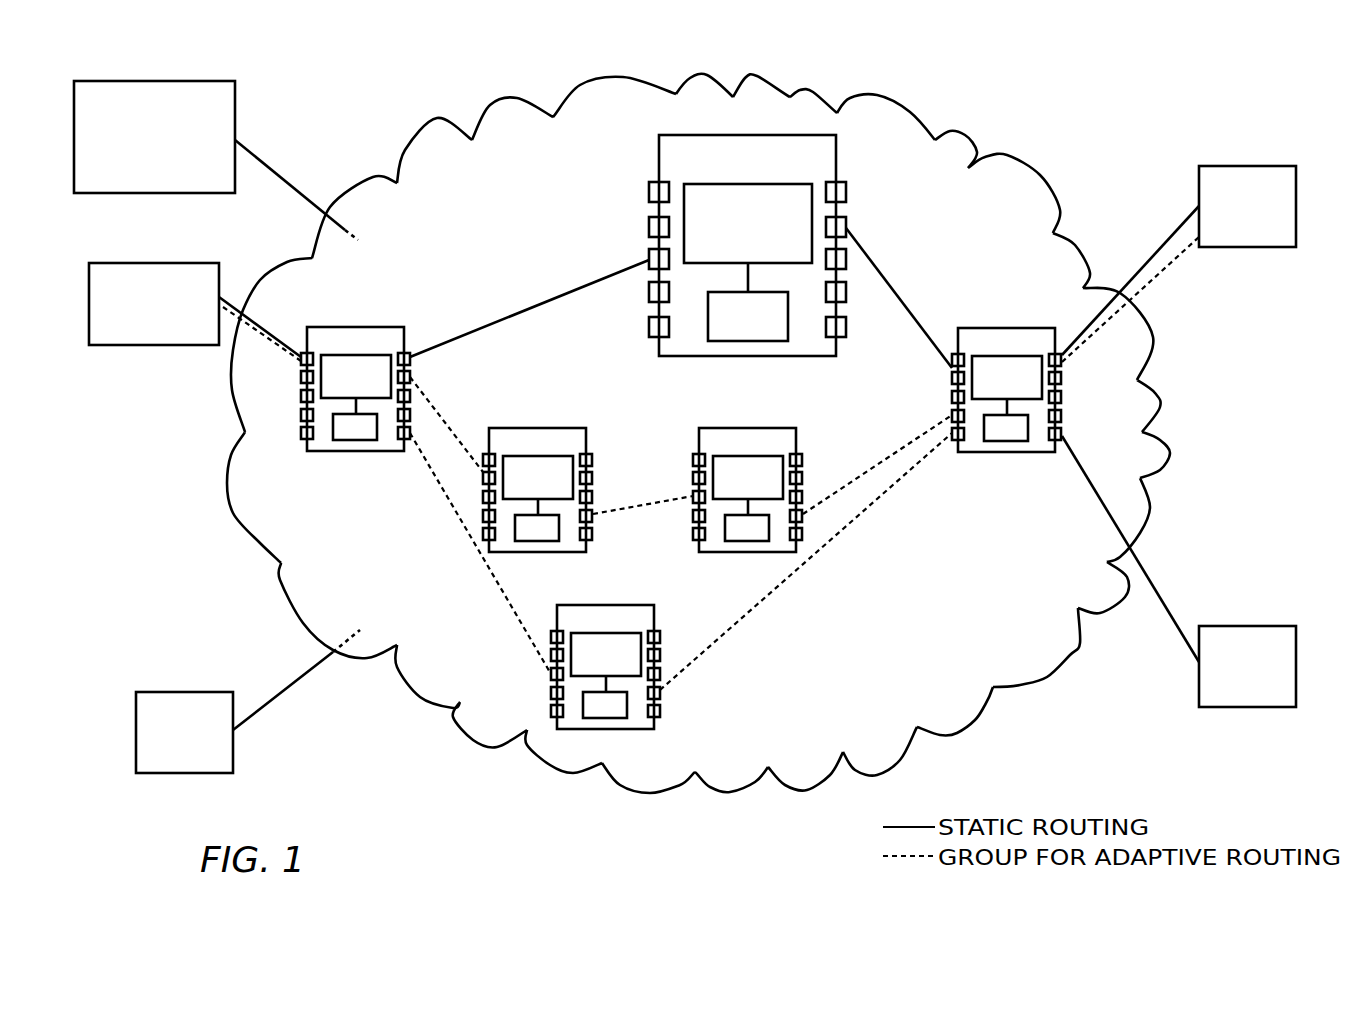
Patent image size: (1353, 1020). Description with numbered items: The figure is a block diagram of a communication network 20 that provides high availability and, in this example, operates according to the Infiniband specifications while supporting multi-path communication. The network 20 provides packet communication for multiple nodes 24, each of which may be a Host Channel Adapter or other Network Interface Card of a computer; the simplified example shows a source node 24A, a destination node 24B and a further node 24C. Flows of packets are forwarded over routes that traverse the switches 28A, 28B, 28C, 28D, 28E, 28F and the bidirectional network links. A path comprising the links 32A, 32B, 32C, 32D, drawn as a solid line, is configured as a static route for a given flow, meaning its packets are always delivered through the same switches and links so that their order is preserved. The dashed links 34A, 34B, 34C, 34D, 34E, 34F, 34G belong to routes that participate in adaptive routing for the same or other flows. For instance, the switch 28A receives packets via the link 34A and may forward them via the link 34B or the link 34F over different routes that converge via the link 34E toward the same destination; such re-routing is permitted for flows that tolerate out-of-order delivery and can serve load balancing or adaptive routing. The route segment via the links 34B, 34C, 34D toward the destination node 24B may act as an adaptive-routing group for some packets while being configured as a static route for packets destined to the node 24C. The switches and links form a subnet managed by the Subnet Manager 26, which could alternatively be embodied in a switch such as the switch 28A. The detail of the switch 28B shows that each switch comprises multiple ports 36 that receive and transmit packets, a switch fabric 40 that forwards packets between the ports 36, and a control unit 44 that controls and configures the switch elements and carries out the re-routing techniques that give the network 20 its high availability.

The communication network 20 is at (958, 735).
The node 24 is at (180, 692).
The source node 24A is at (138, 346).
The destination node 24B is at (1253, 247).
The node 24C is at (1240, 626).
The Subnet Manager 26 is at (152, 194).
The switch 28A is at (347, 452).
The switch 28B is at (732, 224).
The switch 28C is at (1010, 452).
The switch 28D is at (551, 428).
The switch 28E is at (720, 552).
The switch 28F is at (577, 729).
The network link 32A is at (240, 306).
The network link 32B is at (482, 327).
The network link 32C is at (900, 300).
The network link 32D is at (1143, 268).
The network link 34A is at (277, 348).
The network link 34B is at (457, 433).
The network link 34C is at (638, 505).
The network link 34D is at (868, 470).
The network link 34E is at (1170, 264).
The network link 34F is at (512, 612).
The network link 34G is at (745, 615).
The ports 36 is at (649, 192).
The switch fabric 40 is at (808, 184).
The control unit 44 is at (750, 356).